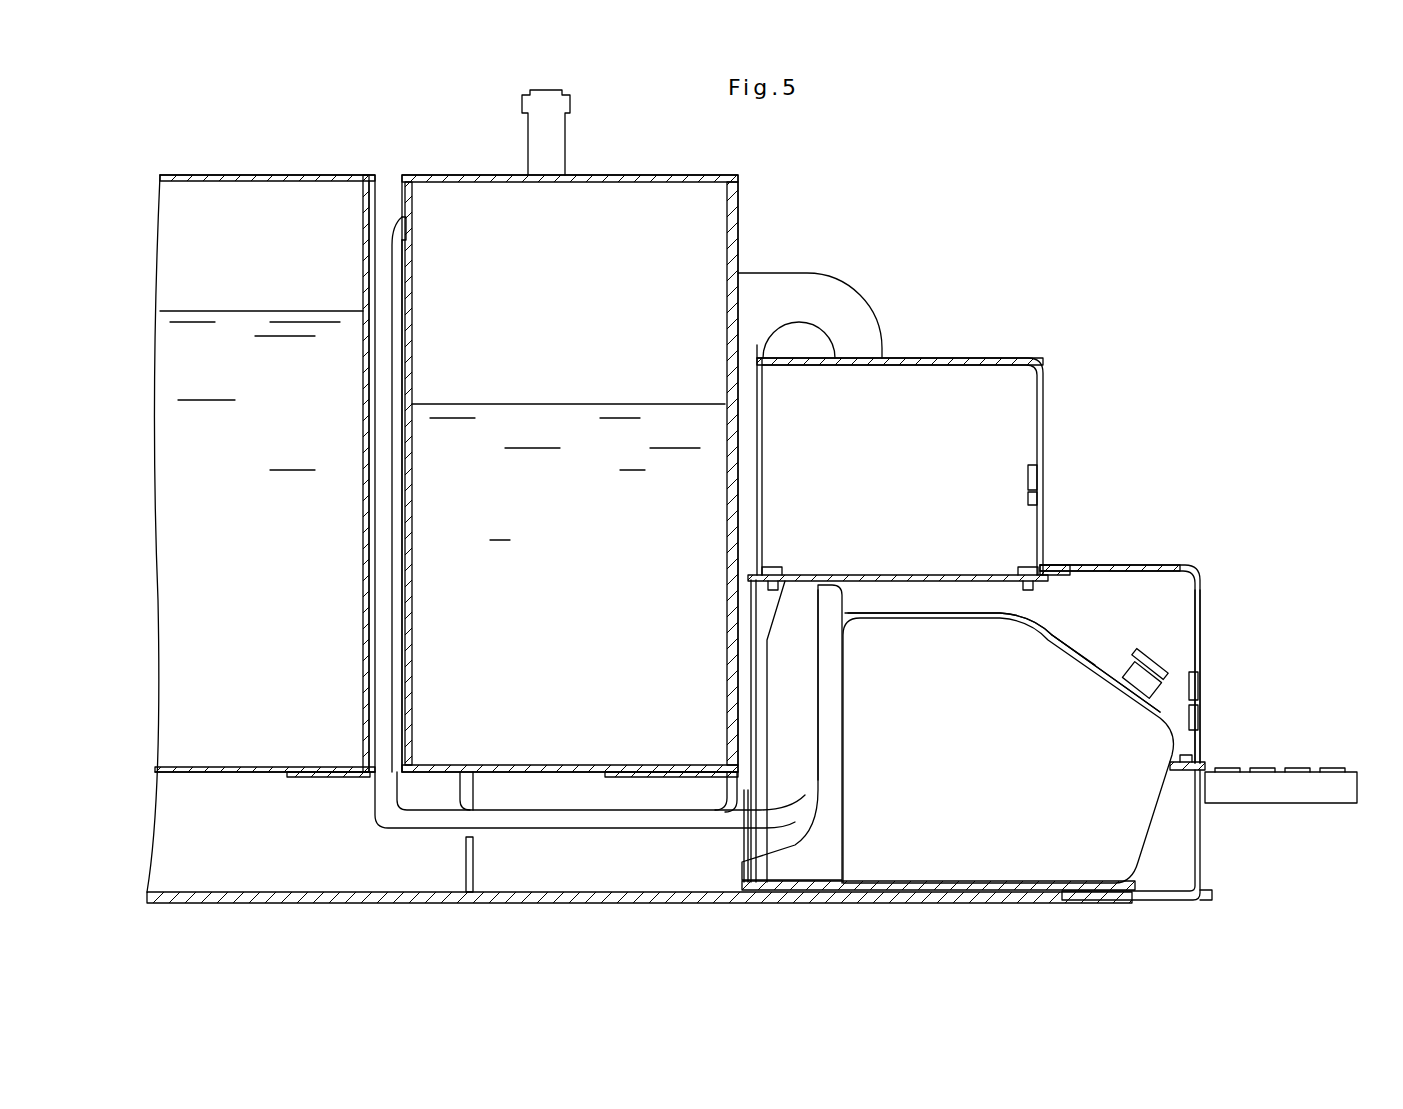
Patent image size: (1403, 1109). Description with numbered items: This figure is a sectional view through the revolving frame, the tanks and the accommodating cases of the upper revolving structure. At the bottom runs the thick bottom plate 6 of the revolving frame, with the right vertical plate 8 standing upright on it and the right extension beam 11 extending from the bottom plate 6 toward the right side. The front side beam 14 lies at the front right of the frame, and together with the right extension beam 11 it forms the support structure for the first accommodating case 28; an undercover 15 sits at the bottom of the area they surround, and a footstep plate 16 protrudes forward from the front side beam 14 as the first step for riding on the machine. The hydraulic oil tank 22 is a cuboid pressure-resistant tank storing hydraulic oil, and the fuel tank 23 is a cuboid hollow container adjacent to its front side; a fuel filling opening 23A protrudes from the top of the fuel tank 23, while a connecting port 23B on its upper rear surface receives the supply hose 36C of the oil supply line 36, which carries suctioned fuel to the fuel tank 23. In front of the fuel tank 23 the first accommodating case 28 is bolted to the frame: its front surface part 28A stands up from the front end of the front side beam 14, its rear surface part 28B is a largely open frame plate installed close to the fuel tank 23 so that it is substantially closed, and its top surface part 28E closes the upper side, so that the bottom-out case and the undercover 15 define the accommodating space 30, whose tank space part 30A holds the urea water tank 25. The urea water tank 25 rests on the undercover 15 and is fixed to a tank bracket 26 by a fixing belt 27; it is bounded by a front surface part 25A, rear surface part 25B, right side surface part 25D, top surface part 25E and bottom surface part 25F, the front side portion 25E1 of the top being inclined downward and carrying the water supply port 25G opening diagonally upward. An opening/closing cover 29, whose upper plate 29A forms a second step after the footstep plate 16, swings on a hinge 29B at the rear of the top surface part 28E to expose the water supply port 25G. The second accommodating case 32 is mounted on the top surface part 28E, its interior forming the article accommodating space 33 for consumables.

The bottom plate 6 is at (425, 903).
The right vertical plate 8 is at (764, 312).
The right extension beam 11 is at (303, 777).
The front side beam 14 is at (1205, 845).
The undercover 15 is at (885, 896).
The footstep plate 16 is at (1252, 785).
The hydraulic oil tank 22 is at (258, 175).
The fuel tank 23 is at (468, 175).
The fuel filling opening 23A is at (545, 133).
The connecting port 23B is at (400, 218).
The urea water tank 25 is at (1000, 775).
The front surface part 25A is at (1155, 815).
The rear surface part 25B is at (840, 713).
The right side surface part 25D is at (945, 820).
The top surface part 25E is at (990, 613).
The front side portion 25E1 is at (1095, 652).
The bottom surface part 25F is at (1046, 890).
The water supply port 25G is at (1152, 677).
The tank bracket 26 is at (800, 860).
The fixing belt 27 is at (878, 616).
The first accommodating case 28 is at (1117, 565).
The front surface part 28A is at (1203, 747).
The rear surface part 28B is at (751, 655).
The top surface part 28E is at (928, 575).
The opening/closing cover 29 is at (1195, 565).
The upper plate 29A is at (1160, 565).
The hinge 29B is at (1048, 570).
The accommodating space 30 is at (1165, 600).
The tank space part 30A is at (1170, 622).
The second accommodating case 32 is at (975, 358).
The article accommodating space 33 is at (898, 415).
The oil supply line 36 is at (513, 812).
The supply hose 36C is at (580, 830).